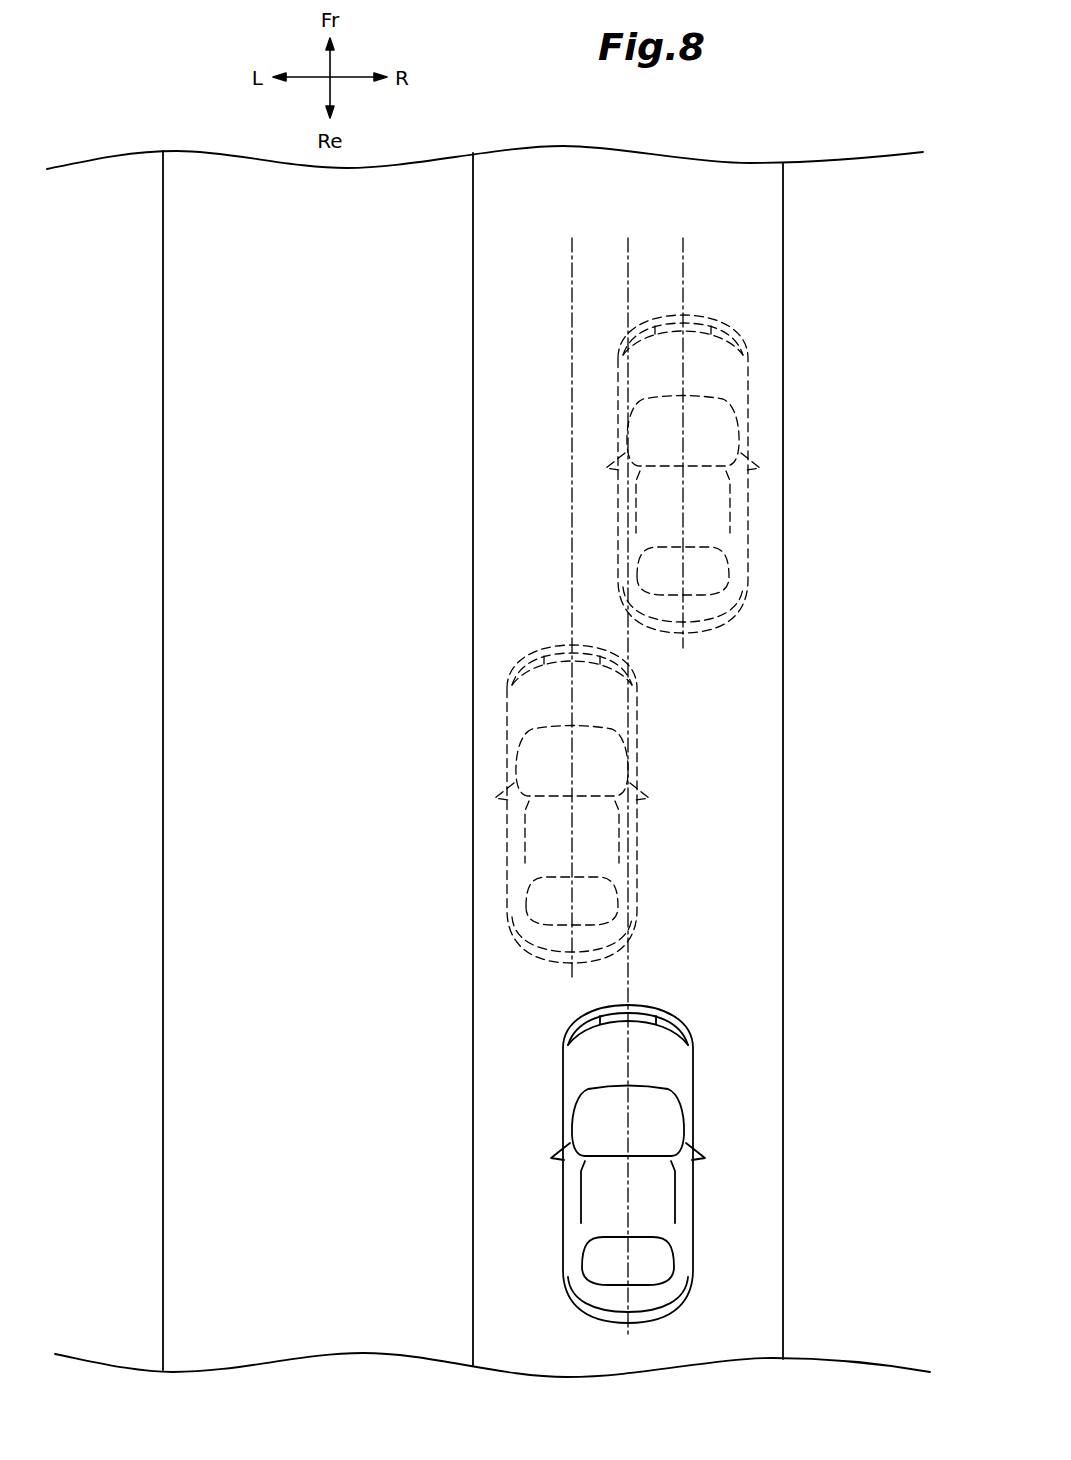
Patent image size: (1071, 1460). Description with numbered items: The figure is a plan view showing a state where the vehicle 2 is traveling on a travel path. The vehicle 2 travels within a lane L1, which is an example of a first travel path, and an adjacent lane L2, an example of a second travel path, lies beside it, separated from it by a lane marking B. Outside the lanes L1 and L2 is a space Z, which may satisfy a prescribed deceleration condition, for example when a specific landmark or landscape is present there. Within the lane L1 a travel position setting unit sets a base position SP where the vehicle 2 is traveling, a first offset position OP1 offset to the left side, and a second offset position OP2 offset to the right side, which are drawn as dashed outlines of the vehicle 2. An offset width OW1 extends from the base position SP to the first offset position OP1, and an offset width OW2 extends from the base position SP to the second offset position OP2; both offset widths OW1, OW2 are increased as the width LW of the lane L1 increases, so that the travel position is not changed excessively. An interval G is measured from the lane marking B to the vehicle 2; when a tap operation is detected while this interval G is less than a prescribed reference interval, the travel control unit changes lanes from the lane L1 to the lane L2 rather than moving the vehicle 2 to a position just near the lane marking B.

The vehicle 2 is at (724, 332).
The lane marking B is at (473, 546).
The lane L1 is at (740, 783).
The lane L2 is at (313, 843).
The space Z is at (71, 791).
The width LW is at (473, 203).
The offset width OW1 is at (628, 251).
The offset width OW2 is at (628, 251).
The interval G is at (555, 1157).